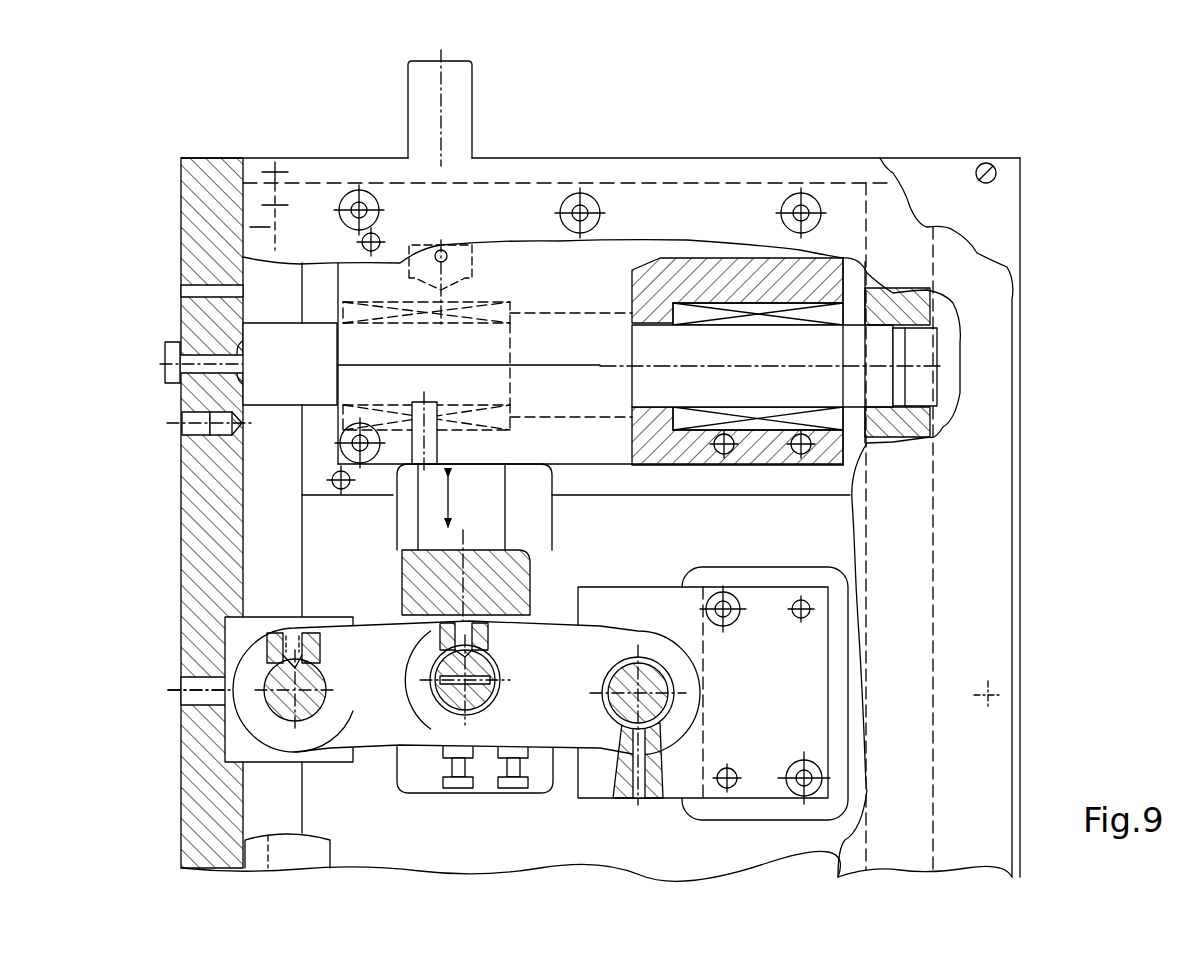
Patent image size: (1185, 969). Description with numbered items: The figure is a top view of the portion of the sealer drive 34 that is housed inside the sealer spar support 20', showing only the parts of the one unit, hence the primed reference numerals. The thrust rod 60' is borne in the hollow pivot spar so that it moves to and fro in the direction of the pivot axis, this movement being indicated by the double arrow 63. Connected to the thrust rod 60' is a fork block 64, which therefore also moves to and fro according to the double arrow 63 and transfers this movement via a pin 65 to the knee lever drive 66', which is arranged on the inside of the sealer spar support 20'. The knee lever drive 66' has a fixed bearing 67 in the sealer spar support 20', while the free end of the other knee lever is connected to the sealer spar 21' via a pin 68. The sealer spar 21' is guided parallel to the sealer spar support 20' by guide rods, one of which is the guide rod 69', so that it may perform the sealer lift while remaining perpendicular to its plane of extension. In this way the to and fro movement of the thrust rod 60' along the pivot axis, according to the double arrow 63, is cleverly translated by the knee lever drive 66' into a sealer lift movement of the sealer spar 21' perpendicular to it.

The sealer drive 34 is at (602, 147).
The guide rod 69' is at (771, 281).
The sealer spar support 20' is at (986, 526).
The thrust rod 60' is at (724, 378).
The double arrow 63 is at (393, 507).
The sealer spar 21' is at (228, 513).
The guide block 64 is at (413, 567).
The pivot pin 68 is at (283, 702).
The knee lever drive 66' is at (466, 772).
The center pivot pin 65 is at (447, 690).
The pivot pin 67 is at (657, 722).